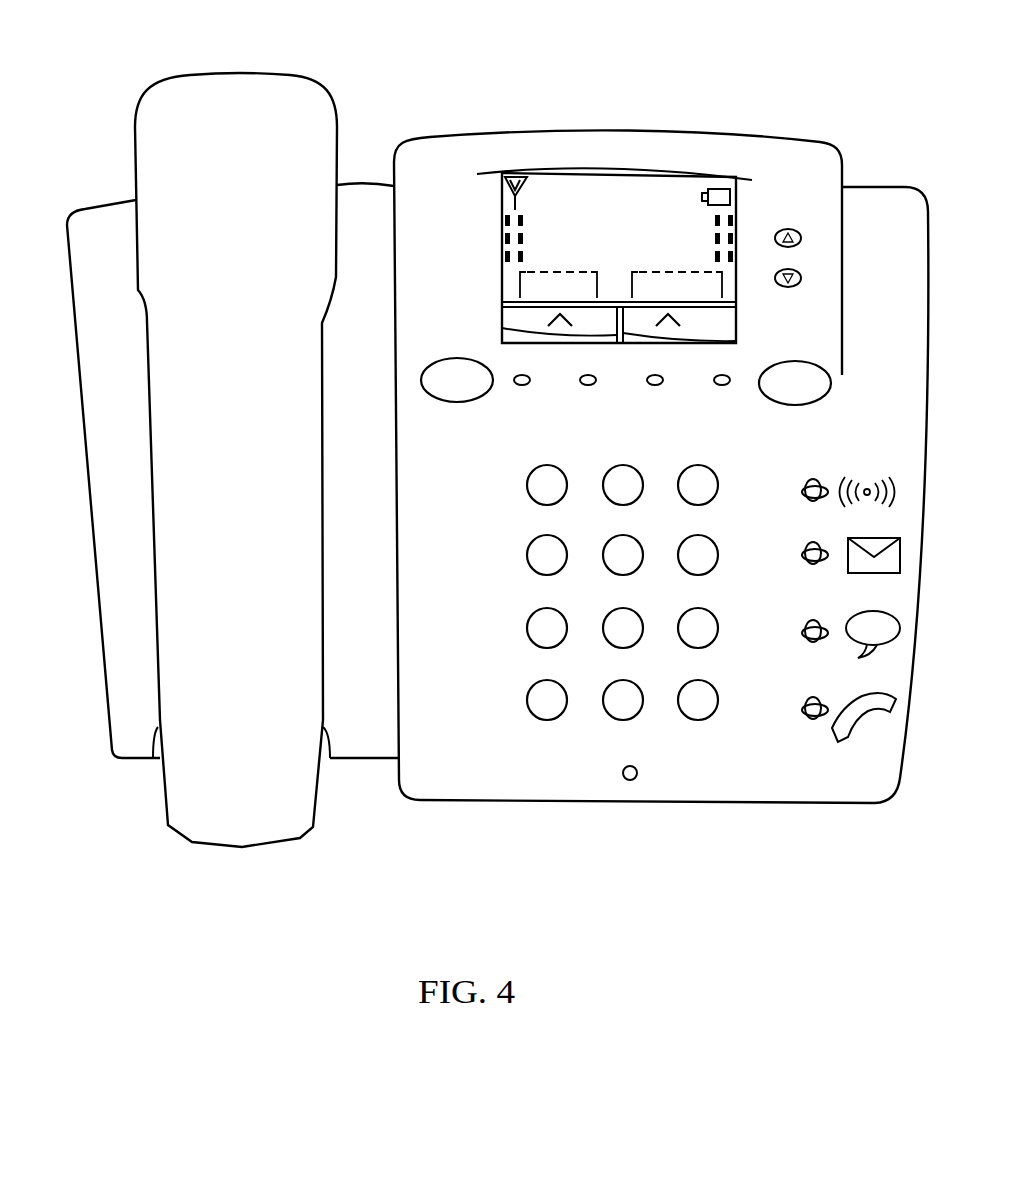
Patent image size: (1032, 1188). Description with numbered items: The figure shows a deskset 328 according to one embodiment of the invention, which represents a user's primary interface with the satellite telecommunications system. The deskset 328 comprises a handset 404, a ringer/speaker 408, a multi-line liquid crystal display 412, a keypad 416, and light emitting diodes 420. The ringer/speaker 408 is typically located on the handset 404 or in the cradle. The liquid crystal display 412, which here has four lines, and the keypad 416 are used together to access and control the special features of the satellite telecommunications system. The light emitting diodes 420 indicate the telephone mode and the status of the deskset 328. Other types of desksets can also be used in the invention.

The deskset 328 is at (840, 56).
The handset 404 is at (240, 72).
The ringer/speaker 408 is at (636, 767).
The multi-line liquid crystal display (LCD) 412 is at (502, 230).
The keypad 416 is at (548, 464).
The light emitting diodes (LEDs) 420 is at (809, 484).